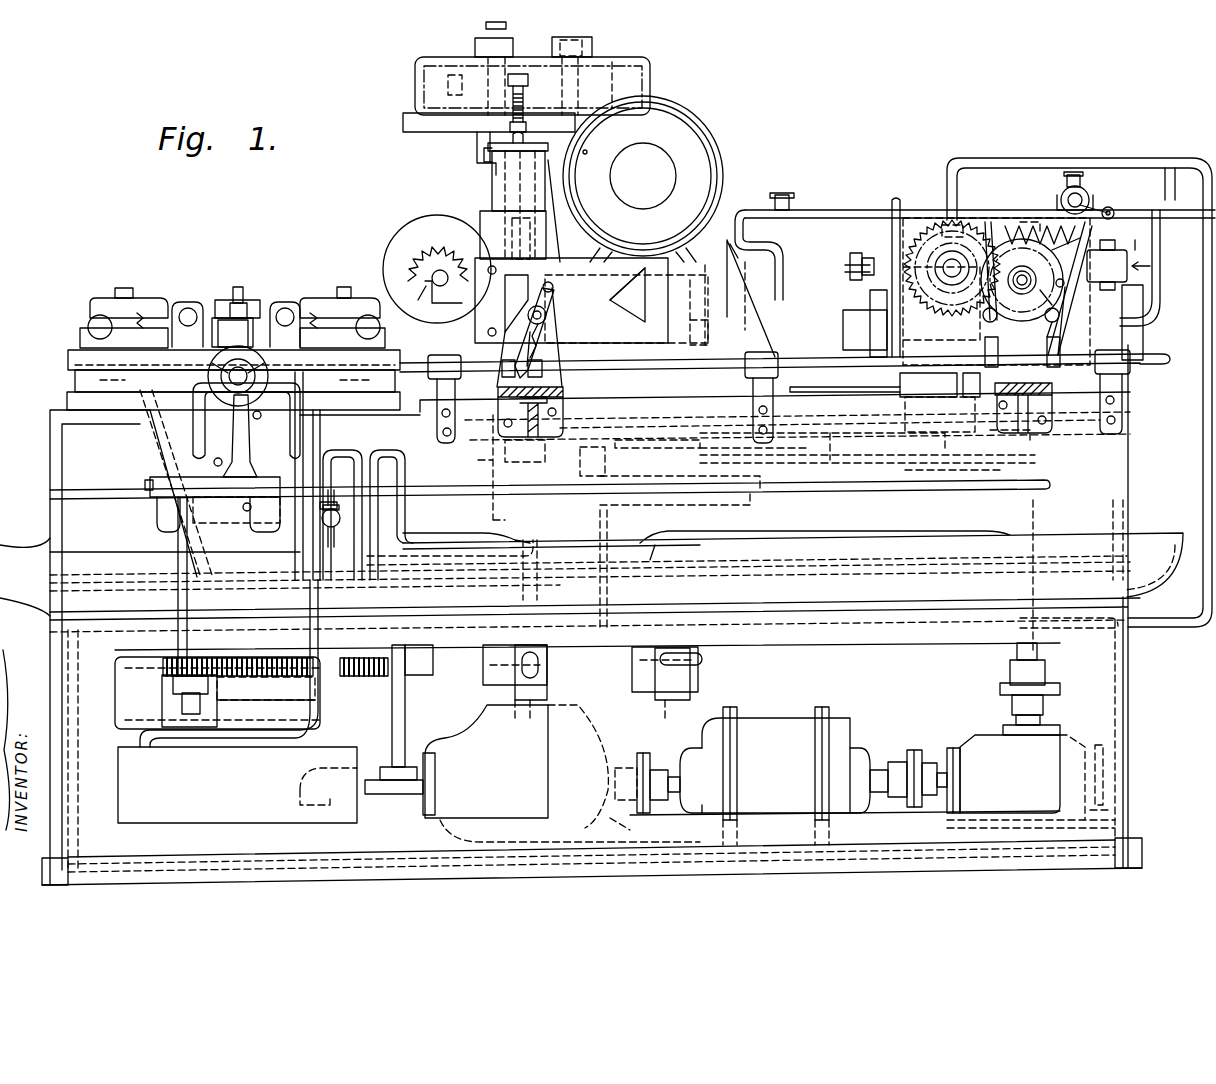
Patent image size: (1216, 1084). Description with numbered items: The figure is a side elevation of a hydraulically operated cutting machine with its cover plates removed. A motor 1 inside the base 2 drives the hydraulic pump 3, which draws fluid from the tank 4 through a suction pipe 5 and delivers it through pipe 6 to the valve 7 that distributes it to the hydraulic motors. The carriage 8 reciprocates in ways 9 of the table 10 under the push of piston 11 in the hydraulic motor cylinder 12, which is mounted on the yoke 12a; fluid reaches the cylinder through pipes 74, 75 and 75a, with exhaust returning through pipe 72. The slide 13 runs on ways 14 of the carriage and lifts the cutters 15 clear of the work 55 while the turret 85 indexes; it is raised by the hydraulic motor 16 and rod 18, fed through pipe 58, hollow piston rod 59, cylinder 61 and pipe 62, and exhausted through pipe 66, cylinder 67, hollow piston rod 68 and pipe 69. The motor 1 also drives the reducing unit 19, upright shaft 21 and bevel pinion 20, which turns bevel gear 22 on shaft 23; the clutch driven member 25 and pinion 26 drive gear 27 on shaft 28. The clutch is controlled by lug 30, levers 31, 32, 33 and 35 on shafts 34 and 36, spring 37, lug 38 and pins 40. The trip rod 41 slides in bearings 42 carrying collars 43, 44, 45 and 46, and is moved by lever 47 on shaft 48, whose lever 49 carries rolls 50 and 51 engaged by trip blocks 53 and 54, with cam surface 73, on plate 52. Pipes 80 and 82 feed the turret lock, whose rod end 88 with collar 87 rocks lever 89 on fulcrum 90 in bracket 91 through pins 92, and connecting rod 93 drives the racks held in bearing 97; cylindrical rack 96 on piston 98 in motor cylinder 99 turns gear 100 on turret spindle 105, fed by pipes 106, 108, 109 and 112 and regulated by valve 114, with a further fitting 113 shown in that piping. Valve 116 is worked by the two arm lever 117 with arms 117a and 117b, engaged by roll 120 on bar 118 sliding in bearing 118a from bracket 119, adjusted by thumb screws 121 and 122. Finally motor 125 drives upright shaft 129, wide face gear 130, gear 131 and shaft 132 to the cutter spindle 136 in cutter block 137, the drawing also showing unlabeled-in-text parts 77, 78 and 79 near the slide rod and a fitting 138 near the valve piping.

The motor 1 is at (837, 776).
The base 2 is at (1130, 705).
The hydraulic pump 3 is at (561, 773).
The tank 4 is at (347, 748).
The suction pipe 5 is at (394, 796).
The pipe 6 is at (395, 696).
The valve 7 is at (952, 267).
The carriage 8 is at (742, 298).
The ways 9 is at (645, 423).
The table 10 is at (1128, 488).
The piston 11 is at (846, 277).
The hydraulic motor cylinder 12 is at (870, 297).
The yoke 12a is at (893, 387).
The slide 13 is at (490, 212).
The ways 14 is at (524, 202).
The cutters 15 is at (420, 265).
The hydraulic motor 16 is at (493, 473).
The rod 18 is at (514, 100).
The reducing unit 19 is at (1031, 781).
The bevel pinion 20 is at (948, 326).
The upright shaft 21 is at (1017, 650).
The bevel gear 22 is at (955, 260).
The shaft 23 is at (1055, 297).
The driven member 25 is at (1076, 245).
The pinion 26 is at (1026, 230).
The gear 27 is at (927, 215).
The shaft 28 is at (953, 268).
The lug 30 is at (1016, 280).
The lever 31 is at (1070, 280).
The lever 32 is at (963, 230).
The lever 33 is at (1055, 328).
The shaft 34 is at (1060, 313).
The lever 35 is at (973, 385).
The shaft 36 is at (979, 309).
The spring 37 is at (1029, 224).
The lug 38 is at (1071, 277).
The pins 40 is at (1058, 340).
The trip rod 41 is at (1165, 366).
The bearings 42 is at (779, 396).
The collar 43 is at (503, 380).
The collar 44 is at (562, 383).
The collar 45 is at (937, 402).
The collar 46 is at (1052, 385).
The lever 47 is at (533, 350).
The shaft 48 is at (547, 313).
The lever 49 is at (552, 298).
The roll 50 is at (554, 285).
The roll 51 is at (543, 336).
The plate 52 is at (668, 297).
The trip block 53 is at (507, 303).
The trip block 54 is at (624, 320).
The work 55 is at (336, 296).
The pipe 58 is at (1032, 484).
The hollow piston rod 59 is at (835, 458).
The cylinder 61 is at (785, 470).
The pipe 62 is at (748, 500).
The pipe 66 is at (602, 458).
The cylinder 67 is at (790, 460).
The hollow piston rod 68 is at (838, 448).
The pipe 69 is at (1012, 436).
The exhaust pipe 72 is at (1160, 627).
The cam surface 73 is at (625, 289).
The pipe 74 is at (950, 265).
The pipe 75 is at (1174, 183).
The pipe 75a is at (1137, 250).
The screw 77 is at (530, 84).
The nut 78 is at (484, 152).
The guide 79 is at (524, 337).
The pipe 80 is at (1037, 190).
The pipe 82 is at (905, 470).
The turret 85 is at (68, 360).
The collar 87 is at (233, 333).
The rear end 88 is at (240, 368).
The lever 89 is at (175, 516).
The fulcrum 90 is at (147, 484).
The bracket 91 is at (158, 475).
The pins 92 is at (236, 359).
The connecting rod 93 is at (185, 712).
The cylindrical rack 96 is at (419, 673).
The bearing 97 is at (215, 706).
The piston 98 is at (498, 682).
The motor cylinder 99 is at (662, 693).
The gear 100 is at (165, 665).
The turret spindle 105 is at (262, 700).
The pressure supply pipe 106 is at (365, 548).
The pipe 108 is at (370, 474).
The pipe 109 is at (663, 556).
The pipe 112 is at (702, 660).
The fitting 113 is at (320, 506).
The valve 114 is at (347, 518).
The valve 116 is at (1082, 186).
The two arm lever 117 is at (1062, 190).
The arm 117a is at (1105, 200).
The arm 117b is at (1055, 240).
The bar 118 is at (828, 210).
The bearing 118a is at (1158, 160).
The bracket 119 is at (785, 245).
The roll 120 is at (1110, 208).
The thumb screw 121 is at (1074, 174).
The thumb screw 122 is at (785, 195).
The motor 125 is at (669, 226).
The upright shaft 129 is at (575, 45).
The wide face gear 130 is at (630, 80).
The gear 131 is at (448, 88).
The shaft 132 is at (480, 178).
The cutter spindle 136 is at (434, 288).
The cutter block 137 is at (418, 230).
The fitting 138 is at (1118, 265).